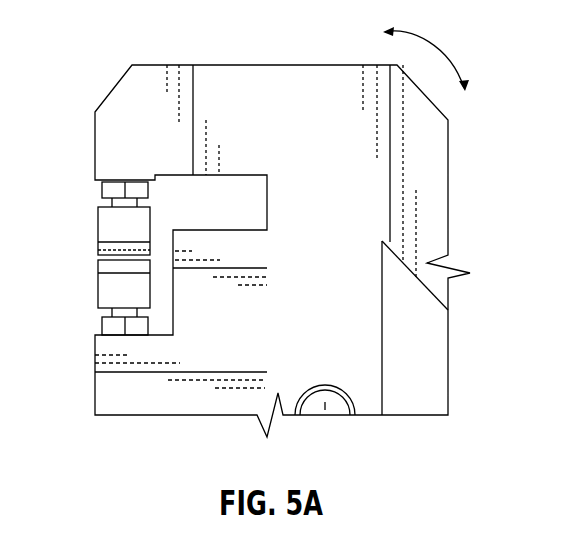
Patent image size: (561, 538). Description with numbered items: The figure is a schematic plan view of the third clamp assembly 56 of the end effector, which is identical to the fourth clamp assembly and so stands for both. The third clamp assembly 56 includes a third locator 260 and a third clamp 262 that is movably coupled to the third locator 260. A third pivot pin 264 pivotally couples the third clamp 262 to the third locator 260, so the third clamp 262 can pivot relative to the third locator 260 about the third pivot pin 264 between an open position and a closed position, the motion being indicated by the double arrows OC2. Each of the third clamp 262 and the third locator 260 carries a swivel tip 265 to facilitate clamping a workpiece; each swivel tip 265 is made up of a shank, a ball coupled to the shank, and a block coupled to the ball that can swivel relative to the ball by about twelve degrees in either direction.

The third clamp assembly 56 is at (100, 46).
The third clamp 262 is at (262, 80).
The third locator 260 is at (187, 405).
The third pivot pin 264 is at (333, 405).
The swivel tip 265 is at (98, 232).
The double arrows OC2 is at (453, 47).